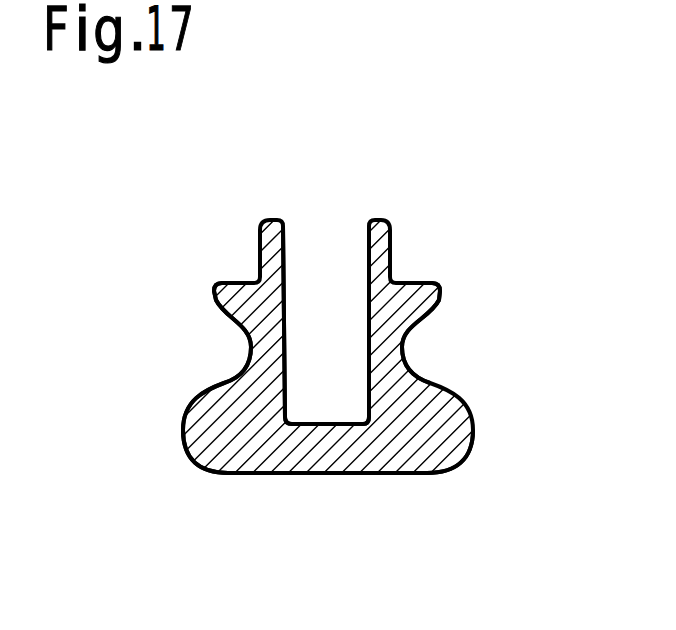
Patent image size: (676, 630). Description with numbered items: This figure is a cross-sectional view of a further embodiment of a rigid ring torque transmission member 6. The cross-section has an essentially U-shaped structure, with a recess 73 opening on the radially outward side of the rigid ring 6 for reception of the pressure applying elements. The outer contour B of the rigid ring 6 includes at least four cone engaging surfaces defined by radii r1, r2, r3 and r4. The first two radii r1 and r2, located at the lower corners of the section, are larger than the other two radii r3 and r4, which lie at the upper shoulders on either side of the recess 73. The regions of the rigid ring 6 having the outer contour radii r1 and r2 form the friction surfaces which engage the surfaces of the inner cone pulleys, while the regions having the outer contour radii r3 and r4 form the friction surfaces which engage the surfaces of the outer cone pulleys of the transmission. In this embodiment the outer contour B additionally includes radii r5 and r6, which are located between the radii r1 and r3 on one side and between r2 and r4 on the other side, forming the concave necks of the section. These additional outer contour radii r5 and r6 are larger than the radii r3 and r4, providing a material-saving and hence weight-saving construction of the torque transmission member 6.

The rigid ring torque transmission member 6 is at (315, 453).
The recess 73 is at (318, 420).
The outer contour B is at (187, 408).
The outer contour radius r1 is at (183, 442).
The outer contour radius r2 is at (473, 447).
The outer contour radius r3 is at (212, 287).
The outer contour radius r4 is at (440, 280).
The additional outer contour radius r5 is at (250, 344).
The additional outer contour radius r6 is at (403, 342).